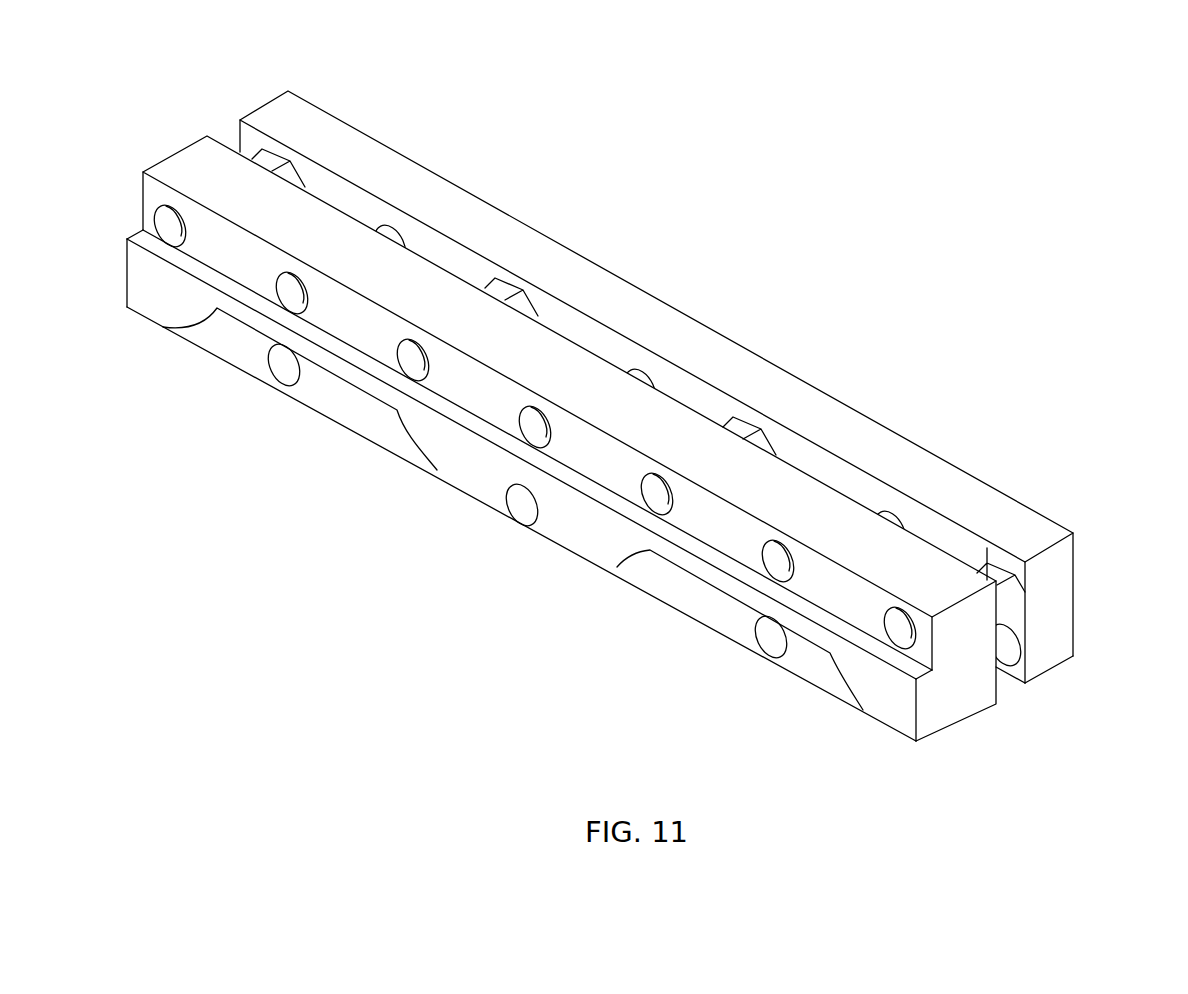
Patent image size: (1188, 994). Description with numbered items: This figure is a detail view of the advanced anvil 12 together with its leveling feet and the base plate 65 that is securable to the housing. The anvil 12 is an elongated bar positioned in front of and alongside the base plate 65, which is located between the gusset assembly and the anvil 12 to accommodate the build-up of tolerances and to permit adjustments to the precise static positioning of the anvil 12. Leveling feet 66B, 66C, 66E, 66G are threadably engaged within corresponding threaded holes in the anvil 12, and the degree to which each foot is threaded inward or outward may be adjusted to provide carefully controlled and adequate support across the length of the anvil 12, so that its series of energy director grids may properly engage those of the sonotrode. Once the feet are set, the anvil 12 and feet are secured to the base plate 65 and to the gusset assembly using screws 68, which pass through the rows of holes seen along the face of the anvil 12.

The anvil 12 is at (953, 690).
The base plate 65 is at (1042, 617).
The leveling foot 66B is at (262, 155).
The leveling foot 66C is at (500, 290).
The leveling foot 66E is at (748, 420).
The leveling foot 66G is at (993, 555).
The screws 68 is at (178, 232).